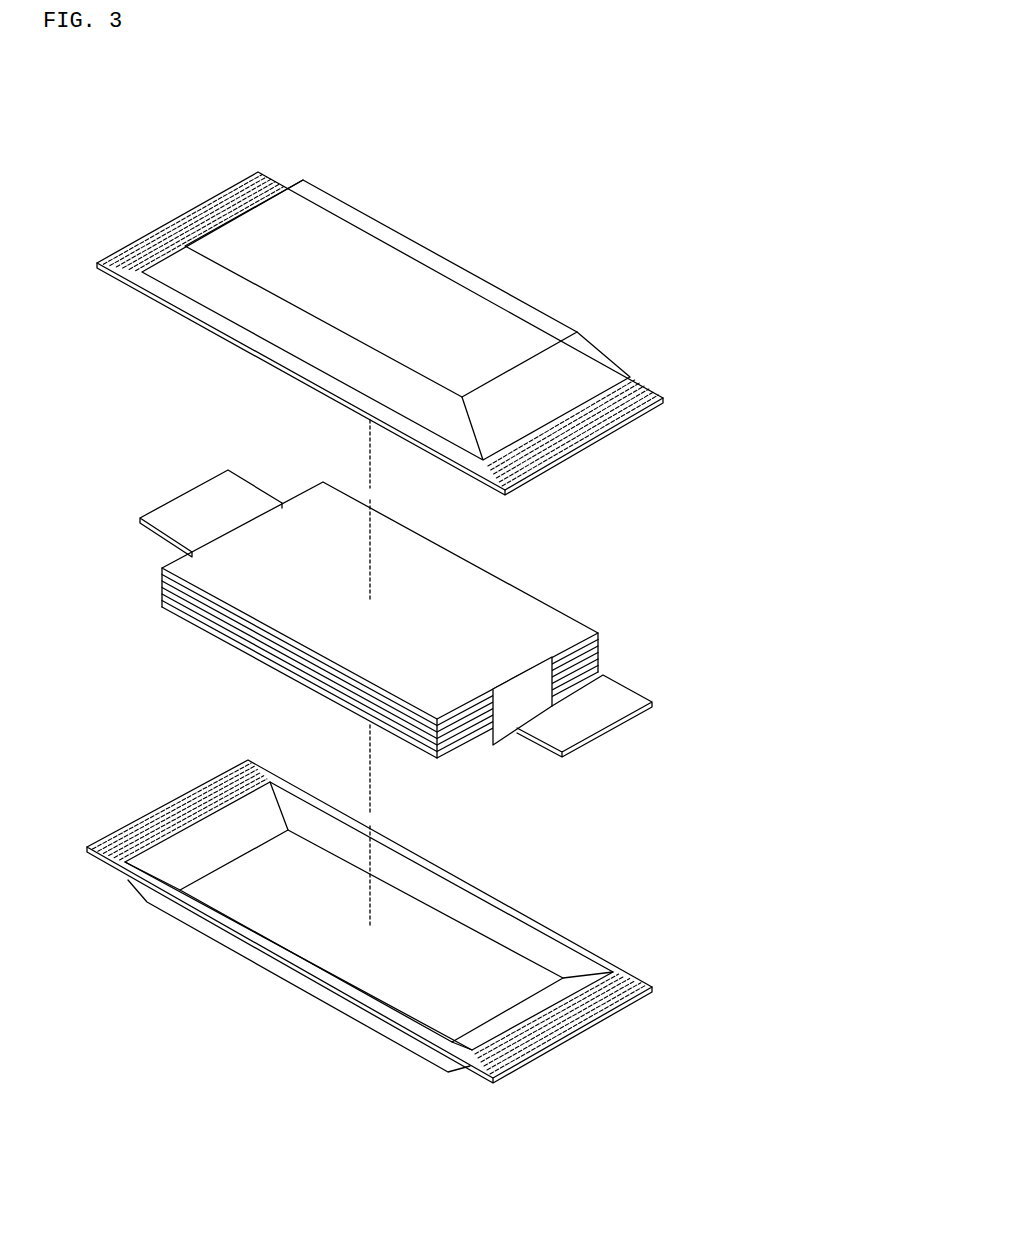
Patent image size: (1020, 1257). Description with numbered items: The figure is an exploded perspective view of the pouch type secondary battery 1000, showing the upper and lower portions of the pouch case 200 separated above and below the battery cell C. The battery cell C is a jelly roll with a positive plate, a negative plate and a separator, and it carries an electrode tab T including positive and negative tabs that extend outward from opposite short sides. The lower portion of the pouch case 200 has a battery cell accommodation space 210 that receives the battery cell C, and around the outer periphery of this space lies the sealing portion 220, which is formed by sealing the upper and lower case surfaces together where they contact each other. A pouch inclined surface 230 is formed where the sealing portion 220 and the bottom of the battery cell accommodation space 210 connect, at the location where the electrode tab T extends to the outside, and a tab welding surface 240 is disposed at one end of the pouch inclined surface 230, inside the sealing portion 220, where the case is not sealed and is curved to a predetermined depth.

The pouch type secondary battery 1000 is at (722, 120).
The pouch case 200 is at (420, 639).
The battery cell accommodation space 210 is at (469, 974).
The sealing portion 220 is at (662, 404).
The pouch inclined surface 230 is at (564, 331).
The tab welding surface 240 is at (607, 434).
The battery cell C is at (428, 614).
The electrode tab T is at (637, 690).